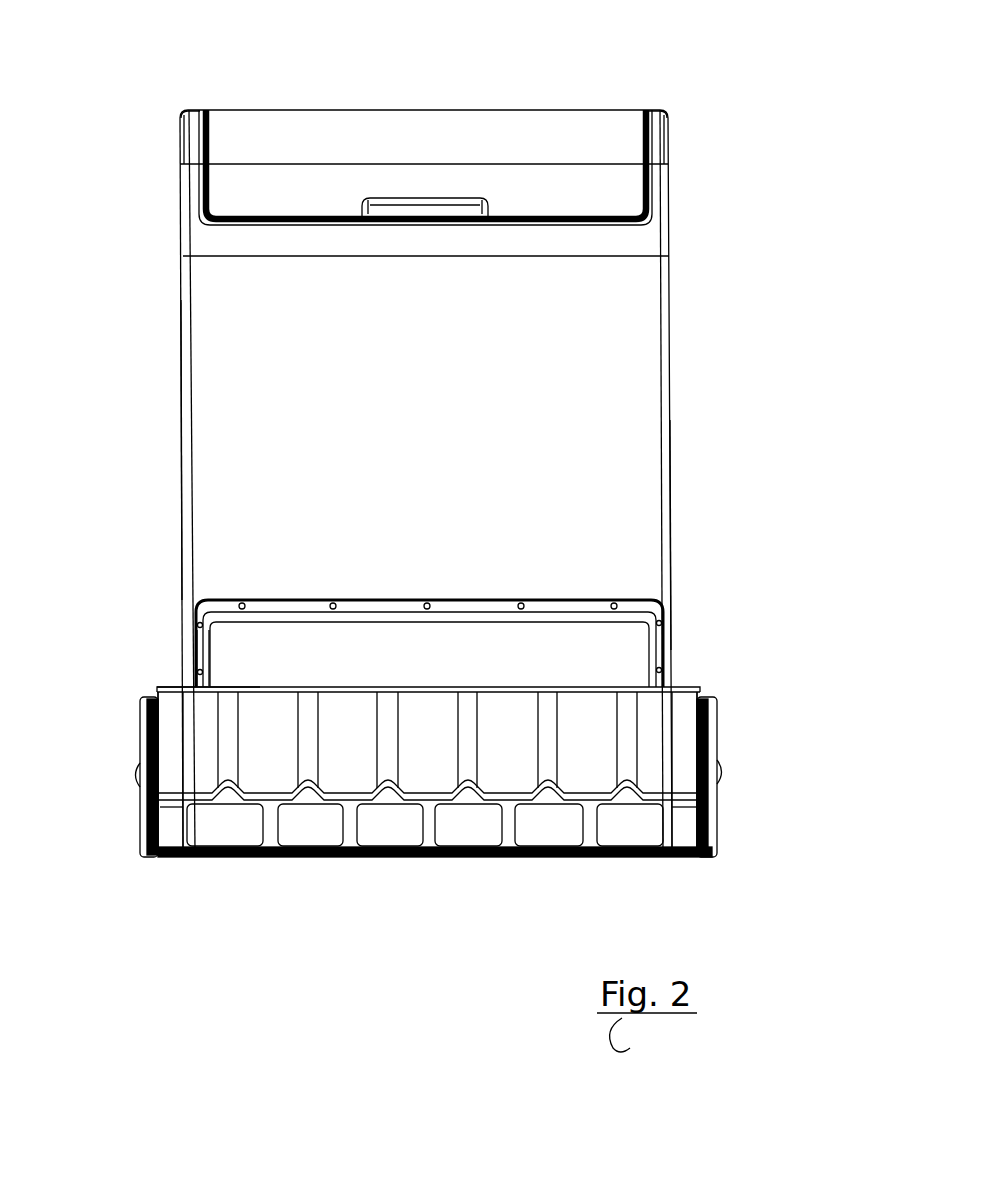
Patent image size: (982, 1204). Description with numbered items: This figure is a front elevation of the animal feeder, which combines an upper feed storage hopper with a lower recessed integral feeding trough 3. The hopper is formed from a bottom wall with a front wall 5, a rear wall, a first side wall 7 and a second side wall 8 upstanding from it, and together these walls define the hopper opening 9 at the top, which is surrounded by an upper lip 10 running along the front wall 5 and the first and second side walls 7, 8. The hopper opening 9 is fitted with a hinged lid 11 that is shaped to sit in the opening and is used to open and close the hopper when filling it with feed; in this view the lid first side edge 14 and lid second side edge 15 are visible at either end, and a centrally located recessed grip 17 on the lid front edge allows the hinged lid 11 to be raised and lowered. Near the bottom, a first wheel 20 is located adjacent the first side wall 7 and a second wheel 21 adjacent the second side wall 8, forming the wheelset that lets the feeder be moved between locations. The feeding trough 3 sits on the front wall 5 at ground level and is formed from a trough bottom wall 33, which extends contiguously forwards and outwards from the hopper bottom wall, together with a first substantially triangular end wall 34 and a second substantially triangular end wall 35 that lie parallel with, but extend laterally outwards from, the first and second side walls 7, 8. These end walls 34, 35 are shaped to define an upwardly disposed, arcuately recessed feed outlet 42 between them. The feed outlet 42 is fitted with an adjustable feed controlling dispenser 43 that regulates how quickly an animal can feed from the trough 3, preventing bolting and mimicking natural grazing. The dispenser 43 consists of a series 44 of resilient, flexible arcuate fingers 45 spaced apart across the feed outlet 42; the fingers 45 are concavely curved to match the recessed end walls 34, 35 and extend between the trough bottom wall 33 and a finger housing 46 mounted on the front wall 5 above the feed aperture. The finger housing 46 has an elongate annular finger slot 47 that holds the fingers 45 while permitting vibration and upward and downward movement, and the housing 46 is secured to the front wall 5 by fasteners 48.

The feeding trough 3 is at (672, 677).
The front wall 5 is at (638, 448).
The first side wall 7 is at (182, 447).
The second side wall 8 is at (672, 542).
The hopper opening 9 is at (648, 108).
The upper lip 10 is at (198, 110).
The hinged lid 11 is at (480, 108).
The lid first side edge 14 is at (197, 130).
The lid second side edge 15 is at (647, 145).
The recessed grip 17 is at (401, 202).
The first wheel 20 is at (143, 830).
The second wheel 21 is at (713, 830).
The trough bottom wall 33 is at (425, 857).
The first end wall 34 is at (170, 845).
The second end wall 35 is at (690, 845).
The feed outlet 42 is at (603, 742).
The feed controlling dispenser 43 is at (363, 888).
The series of fingers 44 is at (253, 860).
The arcuate fingers 45 is at (483, 837).
The finger housing 46 is at (223, 652).
The annular finger slot 47 is at (250, 687).
The fasteners 48 is at (662, 613).